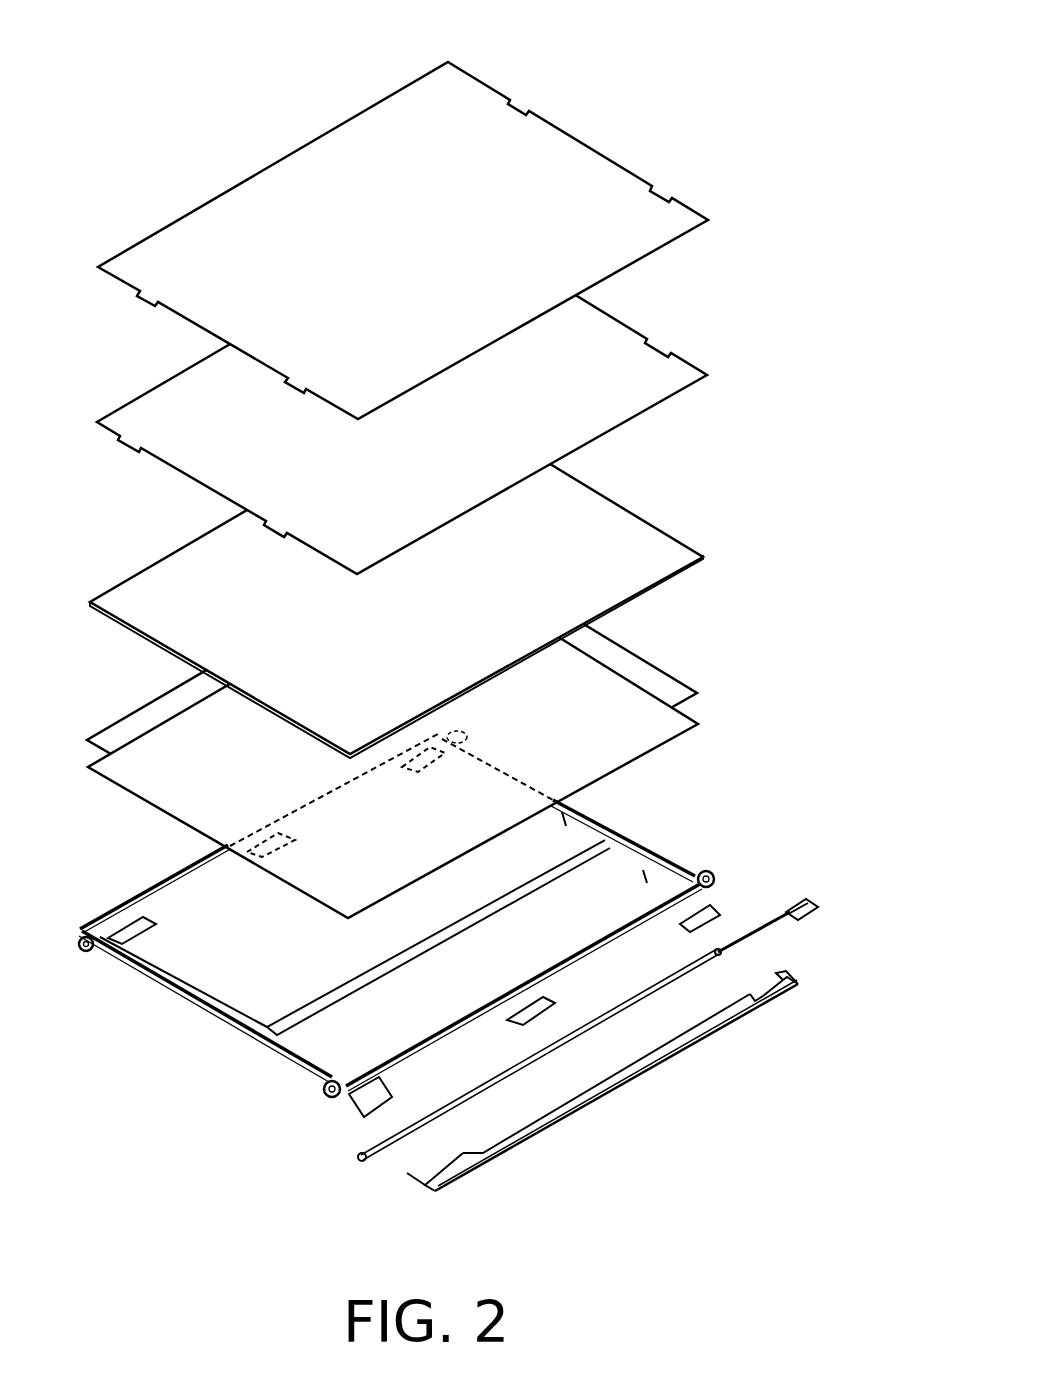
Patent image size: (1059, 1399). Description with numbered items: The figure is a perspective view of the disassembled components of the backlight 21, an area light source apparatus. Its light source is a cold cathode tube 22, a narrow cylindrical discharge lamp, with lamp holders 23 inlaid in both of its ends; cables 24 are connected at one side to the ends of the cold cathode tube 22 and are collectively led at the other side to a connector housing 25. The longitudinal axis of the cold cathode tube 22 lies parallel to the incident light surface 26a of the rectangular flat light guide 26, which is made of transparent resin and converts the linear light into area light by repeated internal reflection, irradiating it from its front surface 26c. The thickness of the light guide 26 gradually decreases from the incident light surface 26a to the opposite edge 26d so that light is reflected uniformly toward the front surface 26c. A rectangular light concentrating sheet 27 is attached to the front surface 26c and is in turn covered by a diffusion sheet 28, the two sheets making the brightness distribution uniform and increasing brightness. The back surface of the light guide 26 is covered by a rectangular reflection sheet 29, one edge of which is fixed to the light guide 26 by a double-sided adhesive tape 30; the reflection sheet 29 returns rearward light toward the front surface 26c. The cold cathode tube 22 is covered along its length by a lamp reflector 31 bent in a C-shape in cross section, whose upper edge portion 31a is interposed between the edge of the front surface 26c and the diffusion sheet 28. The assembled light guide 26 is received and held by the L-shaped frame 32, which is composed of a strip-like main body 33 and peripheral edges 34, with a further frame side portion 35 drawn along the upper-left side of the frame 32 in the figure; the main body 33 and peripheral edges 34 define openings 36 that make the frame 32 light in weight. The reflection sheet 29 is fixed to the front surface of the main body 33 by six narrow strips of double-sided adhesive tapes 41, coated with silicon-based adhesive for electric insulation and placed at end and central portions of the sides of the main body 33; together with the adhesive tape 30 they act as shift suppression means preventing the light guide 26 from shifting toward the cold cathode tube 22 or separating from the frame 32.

The backlight 21 is at (659, 33).
The cold cathode tube 22 is at (563, 1049).
The lamp holder 23 is at (364, 1162).
The cable 24 is at (763, 938).
The connector housing 25 is at (798, 903).
The light guide 26 is at (669, 530).
The incident light surface 26a is at (652, 590).
The front surface 26c is at (584, 505).
The opposite edge 26d is at (125, 581).
The light concentrating sheet 27 is at (689, 357).
The diffusion sheet 28 is at (689, 203).
The reflection sheet 29 is at (683, 711).
The double-sided adhesive tape 30 is at (127, 716).
The lamp reflector 31 is at (628, 1081).
The upper edge portion 31a is at (757, 1003).
The frame 32 is at (407, 914).
The main body 33 is at (606, 836).
The peripheral edge 34 is at (208, 1015).
The frame side portion 35 is at (172, 883).
The opening 36 is at (563, 825).
The double-sided adhesive tape 41 is at (438, 772).